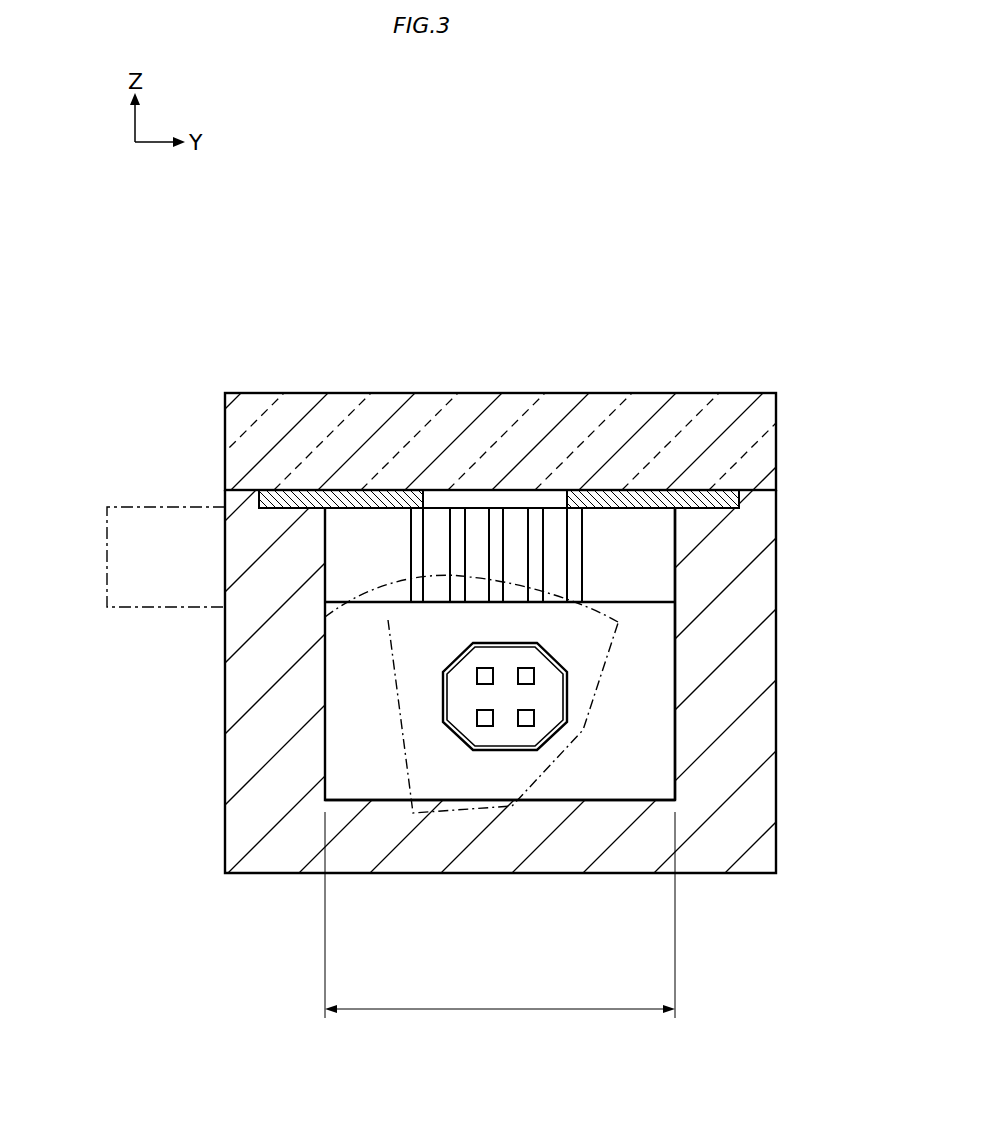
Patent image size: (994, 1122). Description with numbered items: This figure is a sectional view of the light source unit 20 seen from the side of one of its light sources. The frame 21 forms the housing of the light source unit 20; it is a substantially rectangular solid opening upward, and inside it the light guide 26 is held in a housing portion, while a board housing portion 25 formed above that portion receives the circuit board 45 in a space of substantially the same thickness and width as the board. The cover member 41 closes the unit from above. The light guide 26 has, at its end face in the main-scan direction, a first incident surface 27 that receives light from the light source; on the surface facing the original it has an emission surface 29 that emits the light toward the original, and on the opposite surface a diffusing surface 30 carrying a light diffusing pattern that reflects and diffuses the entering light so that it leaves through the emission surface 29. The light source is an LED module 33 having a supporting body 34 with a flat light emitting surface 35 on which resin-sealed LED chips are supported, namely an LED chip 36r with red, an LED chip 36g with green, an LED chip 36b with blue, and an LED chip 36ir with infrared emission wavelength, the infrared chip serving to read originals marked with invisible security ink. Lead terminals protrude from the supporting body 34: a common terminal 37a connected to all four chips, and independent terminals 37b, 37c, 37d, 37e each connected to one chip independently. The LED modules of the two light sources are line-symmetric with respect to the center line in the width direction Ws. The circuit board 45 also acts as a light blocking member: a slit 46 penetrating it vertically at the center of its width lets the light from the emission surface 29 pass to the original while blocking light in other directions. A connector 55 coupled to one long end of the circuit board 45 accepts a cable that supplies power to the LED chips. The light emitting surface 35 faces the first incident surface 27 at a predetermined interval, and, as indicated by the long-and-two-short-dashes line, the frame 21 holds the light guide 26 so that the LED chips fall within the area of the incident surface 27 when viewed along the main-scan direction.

The light source unit 20 is at (294, 294).
The frame 21 is at (218, 718).
The board housing portion 25 is at (300, 505).
The light guide 26 is at (396, 746).
The first incident surface 27 is at (410, 662).
The emission surface 29 is at (325, 618).
The diffusing surface 30 is at (490, 810).
The LED module 33 is at (684, 641).
The supporting body 34 is at (673, 703).
The light emitting surface 35 is at (643, 762).
The LED chip with red emission wavelength 36r is at (477, 677).
The LED chip with green emission wavelength 36g is at (486, 725).
The LED chip with blue emission wavelength 36b is at (520, 725).
The LED chip with infrared emission wavelength 36ir is at (533, 677).
The common terminal 37a is at (573, 527).
The independent terminal 37b is at (537, 525).
The independent terminal 37c is at (497, 523).
The independent terminal 37d is at (457, 523).
The independent terminal 37e is at (416, 520).
The cover member 41 is at (225, 420).
The circuit board 45 is at (737, 497).
The slit 46 is at (512, 502).
The connector 55 is at (137, 486).
The center line in the width direction Ws is at (500, 927).